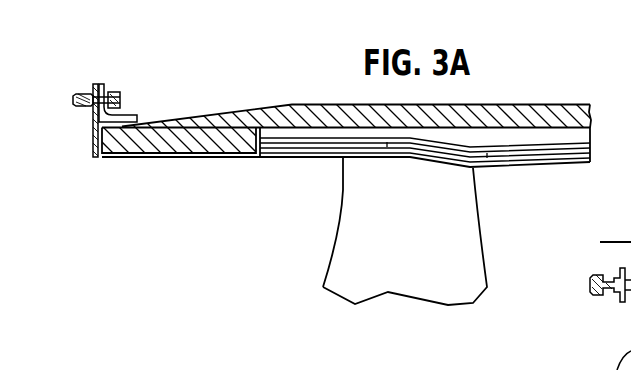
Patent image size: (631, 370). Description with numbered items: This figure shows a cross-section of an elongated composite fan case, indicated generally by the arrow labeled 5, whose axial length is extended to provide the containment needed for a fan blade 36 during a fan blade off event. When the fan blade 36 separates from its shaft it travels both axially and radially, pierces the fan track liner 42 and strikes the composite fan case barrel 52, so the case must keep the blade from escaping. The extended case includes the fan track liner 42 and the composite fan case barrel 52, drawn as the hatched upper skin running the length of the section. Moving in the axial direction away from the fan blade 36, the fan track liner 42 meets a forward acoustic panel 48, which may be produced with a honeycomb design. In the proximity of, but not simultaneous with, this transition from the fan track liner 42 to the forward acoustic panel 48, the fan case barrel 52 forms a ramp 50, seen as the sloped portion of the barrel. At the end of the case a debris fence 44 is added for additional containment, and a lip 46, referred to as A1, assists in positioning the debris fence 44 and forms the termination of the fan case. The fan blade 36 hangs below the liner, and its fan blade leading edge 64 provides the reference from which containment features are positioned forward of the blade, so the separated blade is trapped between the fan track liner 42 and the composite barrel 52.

The composite structure assembly 5 is at (552, 49).
The fan blade 36 is at (460, 237).
The fan track liner 42 is at (295, 146).
The debris fence 44 is at (95, 120).
The lip 46 is at (108, 85).
The forward acoustic panel 48 is at (174, 130).
The ramp 50 is at (265, 112).
The composite fan case barrel 52 is at (492, 116).
The fan blade leading edge 64 is at (338, 257).